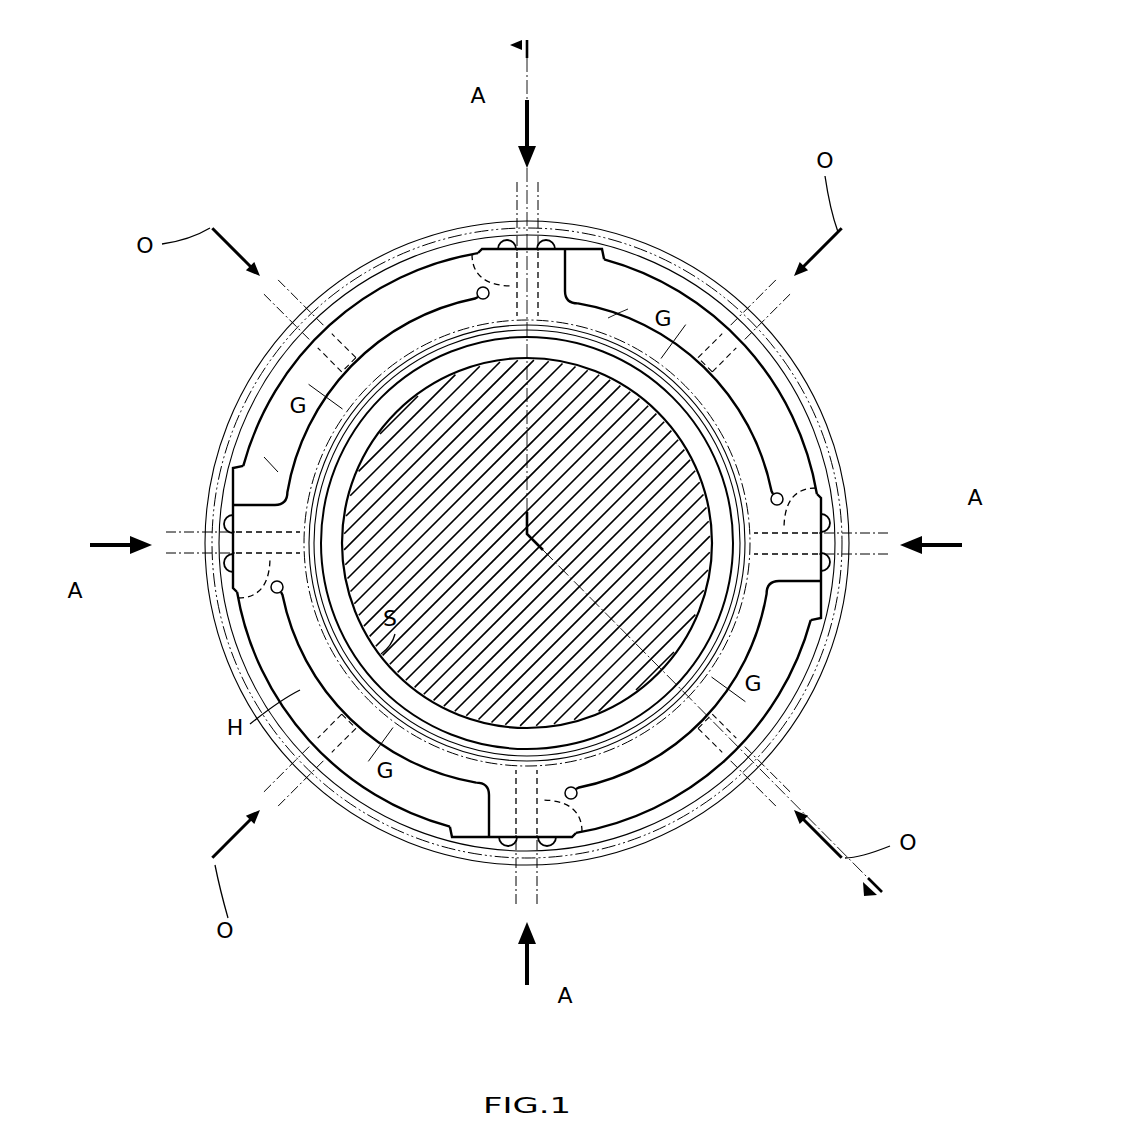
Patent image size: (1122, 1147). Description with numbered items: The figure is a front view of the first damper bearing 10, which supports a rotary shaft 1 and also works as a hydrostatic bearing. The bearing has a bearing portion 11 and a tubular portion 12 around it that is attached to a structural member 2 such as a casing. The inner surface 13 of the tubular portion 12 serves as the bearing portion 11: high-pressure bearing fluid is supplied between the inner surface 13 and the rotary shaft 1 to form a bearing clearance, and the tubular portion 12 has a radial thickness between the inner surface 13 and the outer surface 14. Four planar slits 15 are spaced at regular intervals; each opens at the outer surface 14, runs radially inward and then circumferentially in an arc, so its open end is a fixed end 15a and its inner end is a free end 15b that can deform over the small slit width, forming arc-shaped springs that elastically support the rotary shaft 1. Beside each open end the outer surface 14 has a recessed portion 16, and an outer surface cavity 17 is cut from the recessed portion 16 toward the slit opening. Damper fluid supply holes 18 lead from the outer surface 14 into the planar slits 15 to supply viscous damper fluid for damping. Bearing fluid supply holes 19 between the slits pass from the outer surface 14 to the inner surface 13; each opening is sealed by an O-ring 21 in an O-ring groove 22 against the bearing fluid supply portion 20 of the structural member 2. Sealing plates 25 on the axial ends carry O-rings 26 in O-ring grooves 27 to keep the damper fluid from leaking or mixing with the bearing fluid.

The rotary shaft 1 is at (445, 572).
The structural member 2 is at (390, 84).
The first damper bearing 10 is at (825, 92).
The bearing portion 11 is at (650, 520).
The tubular portion 12 is at (766, 634).
The inner surface 13 is at (700, 432).
The outer surface 14 is at (620, 308).
The planar slit 15 is at (655, 283).
The fixed end 15a is at (590, 245).
The free end 15b is at (524, 543).
The recessed portion 16 is at (502, 240).
The outer surface cavity 17 is at (342, 322).
The damper fluid supply hole 18 is at (305, 333).
The bearing fluid supply hole 19 is at (478, 290).
The bearing fluid supply portion 20 is at (539, 182).
The O-ring 21 is at (560, 208).
The O-ring groove 22 is at (474, 258).
The sealing plate 25 is at (268, 462).
The O-ring 26 is at (338, 248).
The O-ring groove 27 is at (527, 543).